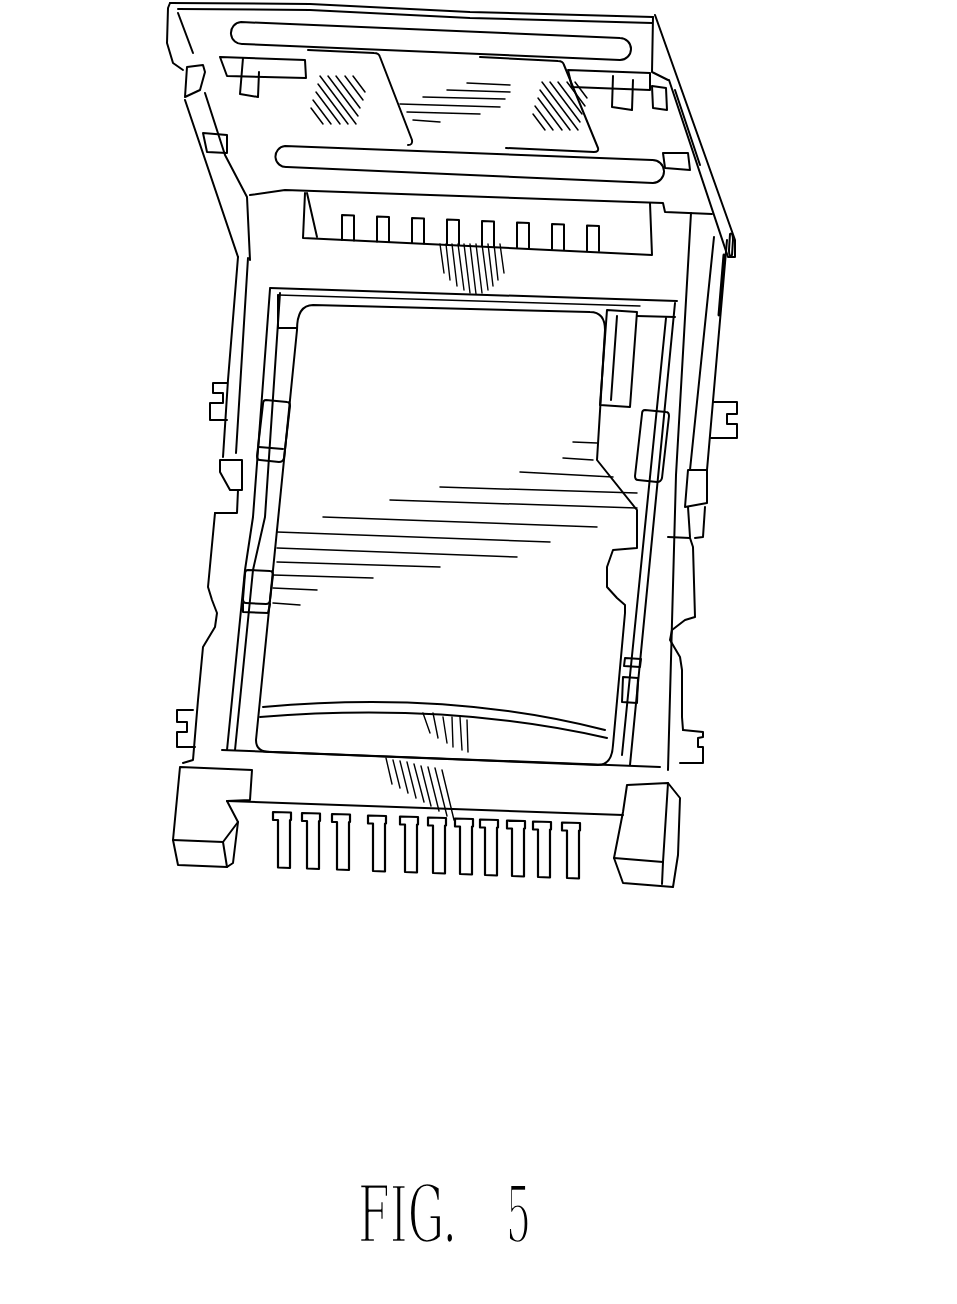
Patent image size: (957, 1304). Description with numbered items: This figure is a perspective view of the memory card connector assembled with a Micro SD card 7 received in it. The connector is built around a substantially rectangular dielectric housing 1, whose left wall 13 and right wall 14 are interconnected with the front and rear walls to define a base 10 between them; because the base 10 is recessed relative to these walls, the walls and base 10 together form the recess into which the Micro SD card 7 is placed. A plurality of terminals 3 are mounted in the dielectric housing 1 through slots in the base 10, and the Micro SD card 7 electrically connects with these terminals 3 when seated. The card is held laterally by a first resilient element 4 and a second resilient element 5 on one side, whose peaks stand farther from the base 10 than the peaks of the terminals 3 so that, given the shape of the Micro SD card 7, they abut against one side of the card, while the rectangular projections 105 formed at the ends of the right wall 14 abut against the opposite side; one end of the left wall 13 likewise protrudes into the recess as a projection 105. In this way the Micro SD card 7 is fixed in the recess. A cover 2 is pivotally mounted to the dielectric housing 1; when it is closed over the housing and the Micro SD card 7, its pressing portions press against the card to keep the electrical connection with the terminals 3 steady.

The dielectric housing 1 is at (650, 808).
The cover 2 is at (222, 193).
The terminals 3 is at (280, 848).
The first resilient element 4 is at (620, 357).
The second resilient element 5 is at (630, 693).
The Micro SD card 7 is at (600, 552).
The base 10 is at (623, 472).
The left wall 13 is at (663, 602).
The right wall 14 is at (210, 687).
The projection 105 is at (277, 437).